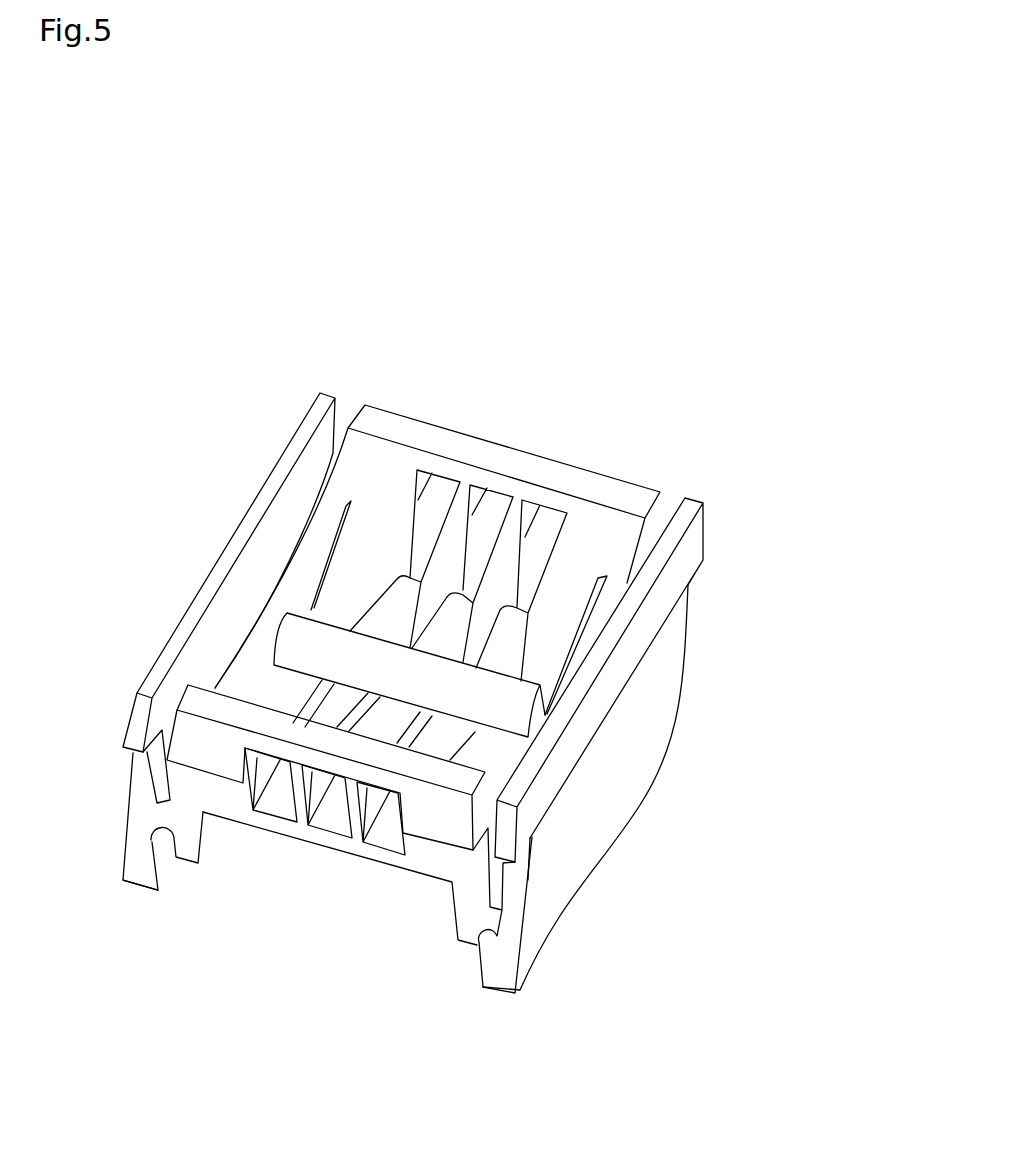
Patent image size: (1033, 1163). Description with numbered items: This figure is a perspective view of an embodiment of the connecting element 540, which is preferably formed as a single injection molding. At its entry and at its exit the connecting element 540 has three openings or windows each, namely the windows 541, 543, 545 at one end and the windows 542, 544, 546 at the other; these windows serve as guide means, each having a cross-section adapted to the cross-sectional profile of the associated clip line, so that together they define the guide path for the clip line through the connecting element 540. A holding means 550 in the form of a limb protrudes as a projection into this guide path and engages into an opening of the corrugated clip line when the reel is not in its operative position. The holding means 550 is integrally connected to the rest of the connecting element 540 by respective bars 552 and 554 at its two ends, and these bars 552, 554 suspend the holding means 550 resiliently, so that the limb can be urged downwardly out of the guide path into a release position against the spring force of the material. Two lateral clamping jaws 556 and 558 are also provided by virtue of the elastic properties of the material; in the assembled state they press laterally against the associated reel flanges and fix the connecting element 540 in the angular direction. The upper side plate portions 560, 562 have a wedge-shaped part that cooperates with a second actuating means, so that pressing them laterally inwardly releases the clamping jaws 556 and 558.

The connecting element 540 is at (95, 119).
The window 541 is at (437, 492).
The window 543 is at (485, 512).
The window 545 is at (545, 537).
The window 542 is at (275, 798).
The window 544 is at (330, 813).
The window 546 is at (387, 830).
The holding means 550 is at (520, 690).
The bar 552 is at (553, 632).
The bar 554 is at (368, 540).
The clamping jaw 556 is at (518, 993).
The clamping jaw 558 is at (155, 888).
The upper side plate portion 560 is at (683, 522).
The upper side plate portion 562 is at (248, 520).